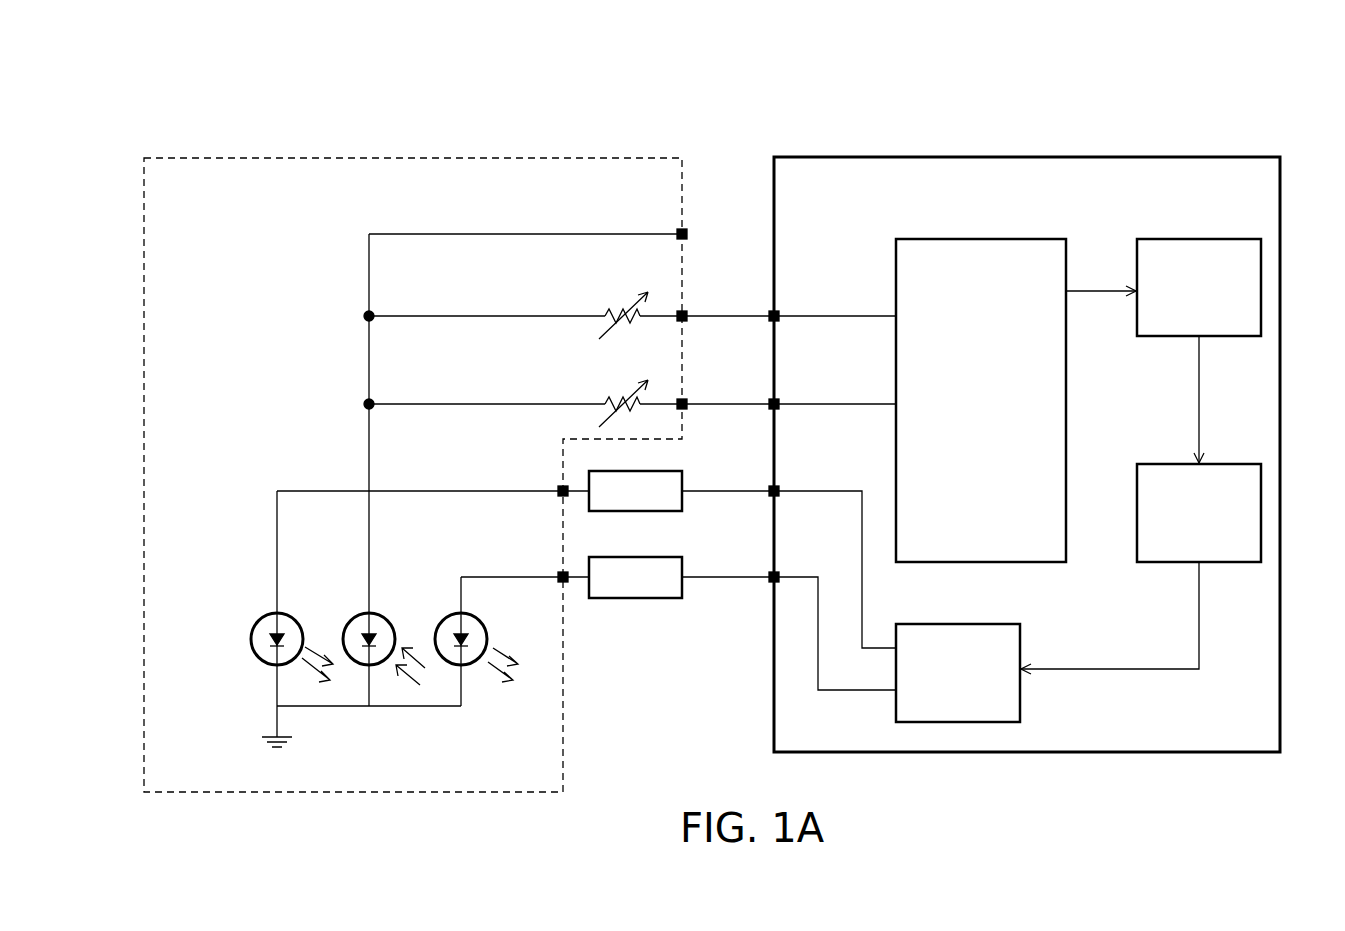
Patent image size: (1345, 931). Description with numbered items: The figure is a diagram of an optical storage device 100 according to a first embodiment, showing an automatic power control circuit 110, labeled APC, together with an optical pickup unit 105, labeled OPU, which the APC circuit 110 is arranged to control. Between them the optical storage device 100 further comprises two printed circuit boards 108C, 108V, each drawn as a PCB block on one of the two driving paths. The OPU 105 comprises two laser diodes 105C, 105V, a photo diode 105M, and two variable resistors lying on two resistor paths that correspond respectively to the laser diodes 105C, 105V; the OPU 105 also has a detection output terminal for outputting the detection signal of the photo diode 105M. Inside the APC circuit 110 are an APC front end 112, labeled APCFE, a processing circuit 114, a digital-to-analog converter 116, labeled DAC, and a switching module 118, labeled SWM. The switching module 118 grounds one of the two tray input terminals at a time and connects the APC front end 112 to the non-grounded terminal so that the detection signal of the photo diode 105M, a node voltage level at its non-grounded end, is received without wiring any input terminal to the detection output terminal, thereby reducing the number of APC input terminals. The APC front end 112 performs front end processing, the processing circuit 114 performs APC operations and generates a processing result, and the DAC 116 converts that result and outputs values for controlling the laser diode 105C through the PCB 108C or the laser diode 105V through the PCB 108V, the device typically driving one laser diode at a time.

The optical storage device 100 is at (1227, 108).
The optical pickup unit 105 is at (528, 158).
The laser diode 105C is at (258, 618).
The photo diode 105M is at (355, 615).
The laser diode 105V is at (452, 615).
The printed circuit board 108C is at (660, 512).
The printed circuit board 108V is at (660, 598).
The automatic power control circuit 110 is at (1082, 157).
The APC front end 112 is at (1195, 239).
The processing circuit 114 is at (1220, 464).
The digital-to-analog converter 116 is at (1022, 643).
The switching module 118 is at (1068, 250).